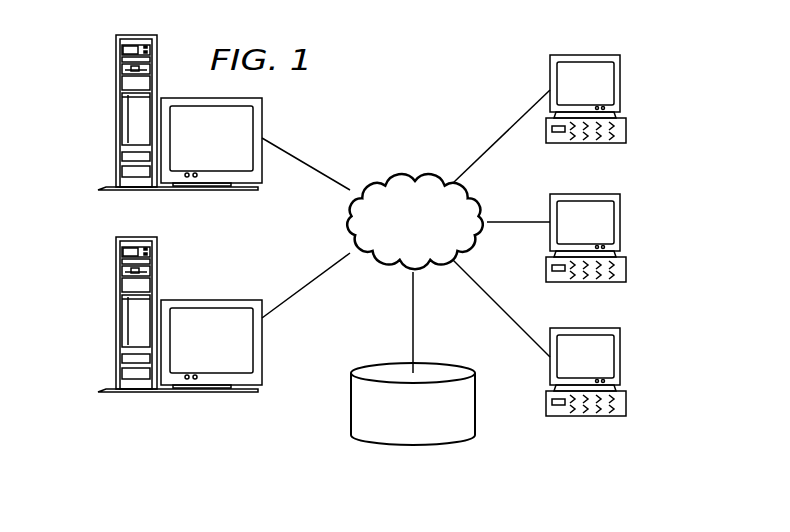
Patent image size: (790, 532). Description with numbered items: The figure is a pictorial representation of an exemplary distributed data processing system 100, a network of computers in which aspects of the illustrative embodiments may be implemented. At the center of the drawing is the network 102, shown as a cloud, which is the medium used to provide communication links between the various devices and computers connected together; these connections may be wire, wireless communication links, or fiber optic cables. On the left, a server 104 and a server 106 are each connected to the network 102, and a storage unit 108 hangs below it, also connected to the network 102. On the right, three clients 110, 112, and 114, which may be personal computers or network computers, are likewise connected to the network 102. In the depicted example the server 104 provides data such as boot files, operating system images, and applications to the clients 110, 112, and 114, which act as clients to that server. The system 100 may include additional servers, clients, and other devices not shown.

The distributed data processing system 100 is at (461, 69).
The network 102 is at (385, 174).
The server 104 is at (116, 115).
The server 106 is at (116, 317).
The storage unit 108 is at (397, 446).
The client 110 is at (620, 83).
The client 112 is at (620, 222).
The client 114 is at (620, 360).